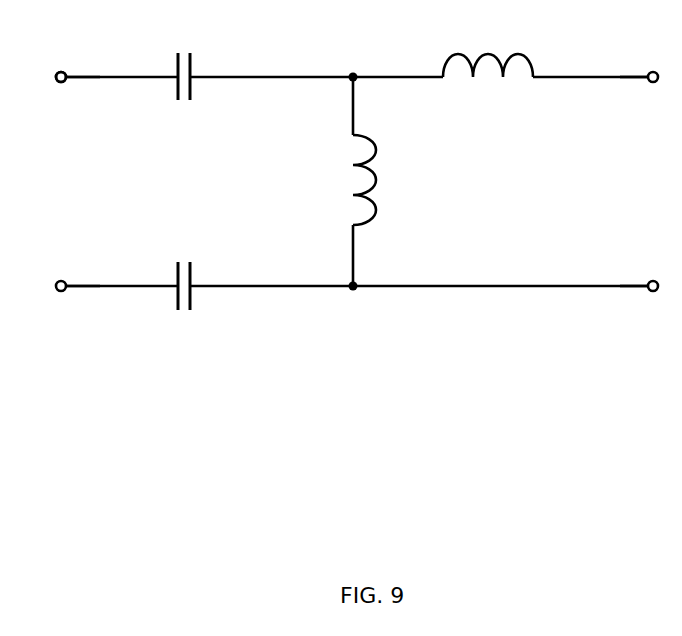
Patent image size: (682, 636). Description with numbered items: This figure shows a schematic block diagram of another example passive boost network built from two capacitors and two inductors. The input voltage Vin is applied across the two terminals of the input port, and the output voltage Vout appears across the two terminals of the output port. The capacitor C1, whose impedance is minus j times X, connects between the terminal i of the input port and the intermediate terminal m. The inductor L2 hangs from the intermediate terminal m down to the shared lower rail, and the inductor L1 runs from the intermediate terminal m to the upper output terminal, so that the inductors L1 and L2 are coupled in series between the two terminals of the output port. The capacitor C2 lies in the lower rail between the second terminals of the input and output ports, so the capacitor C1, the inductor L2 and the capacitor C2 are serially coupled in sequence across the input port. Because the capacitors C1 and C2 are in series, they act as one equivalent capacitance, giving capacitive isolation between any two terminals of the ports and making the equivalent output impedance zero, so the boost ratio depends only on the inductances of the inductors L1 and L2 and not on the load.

The capacitor C1 is at (180, 80).
The capacitor C2 is at (189, 273).
The inductor L1 is at (488, 65).
The inductor L2 is at (348, 180).
The intermediate terminal m is at (357, 61).
The terminal of the input port i is at (44, 77).
The input voltage Vin is at (84, 181).
The output voltage Vout is at (630, 181).